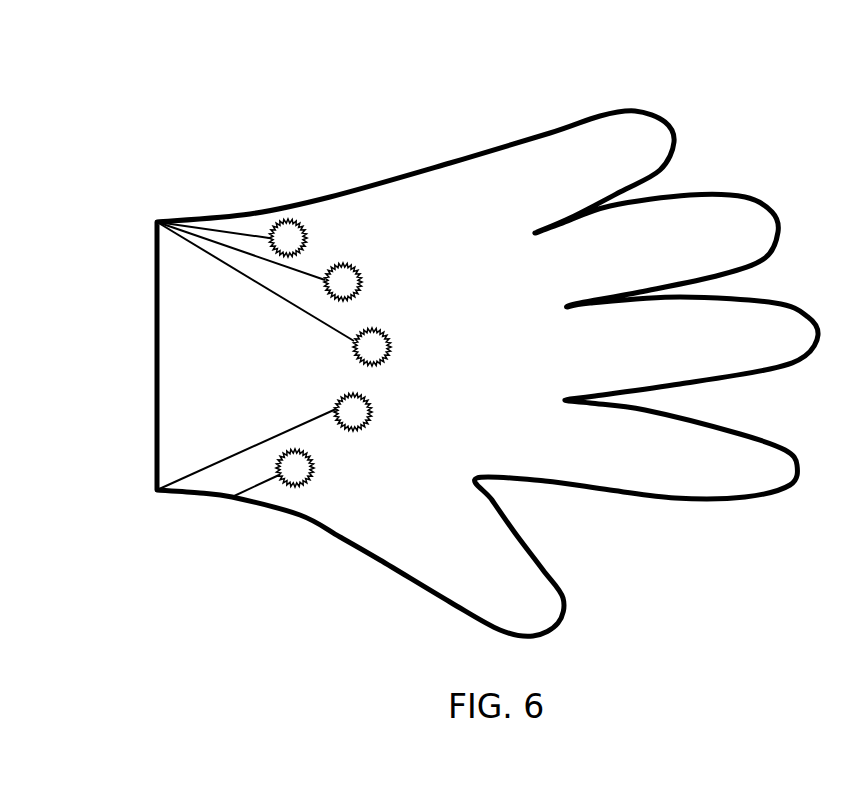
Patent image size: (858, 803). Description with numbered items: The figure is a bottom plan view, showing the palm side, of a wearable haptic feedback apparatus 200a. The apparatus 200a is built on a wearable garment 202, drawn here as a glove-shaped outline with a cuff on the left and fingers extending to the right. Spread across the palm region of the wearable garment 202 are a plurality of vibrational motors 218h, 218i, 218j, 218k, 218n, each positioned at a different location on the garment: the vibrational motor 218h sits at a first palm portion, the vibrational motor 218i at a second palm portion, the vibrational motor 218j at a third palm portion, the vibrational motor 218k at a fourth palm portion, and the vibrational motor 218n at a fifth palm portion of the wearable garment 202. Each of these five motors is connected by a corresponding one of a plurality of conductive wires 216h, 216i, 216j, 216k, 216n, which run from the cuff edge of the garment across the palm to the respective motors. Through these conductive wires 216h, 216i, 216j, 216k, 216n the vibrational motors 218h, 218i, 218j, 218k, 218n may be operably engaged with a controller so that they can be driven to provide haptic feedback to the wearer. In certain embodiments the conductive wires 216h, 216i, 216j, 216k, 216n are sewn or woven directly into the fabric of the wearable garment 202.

The wearable haptic feedback apparatus 200a is at (117, 92).
The wearable garment 202 is at (378, 179).
The conductive wire 216h is at (228, 233).
The conductive wire 216i is at (268, 261).
The conductive wire 216j is at (297, 306).
The conductive wire 216k is at (228, 458).
The conductive wire 216n is at (258, 488).
The vibrational motor 218h is at (308, 234).
The vibrational motor 218i is at (363, 280).
The vibrational motor 218j is at (392, 344).
The vibrational motor 218k is at (373, 409).
The vibrational motor 218n is at (315, 466).